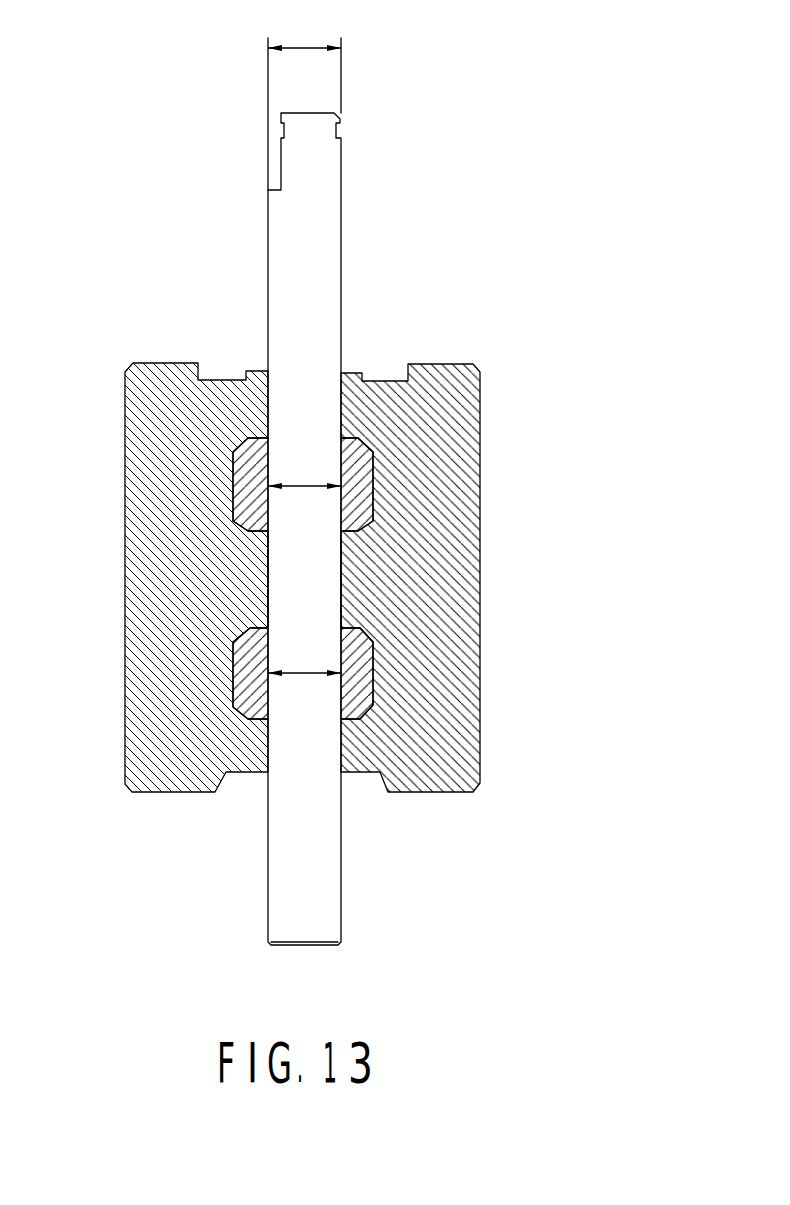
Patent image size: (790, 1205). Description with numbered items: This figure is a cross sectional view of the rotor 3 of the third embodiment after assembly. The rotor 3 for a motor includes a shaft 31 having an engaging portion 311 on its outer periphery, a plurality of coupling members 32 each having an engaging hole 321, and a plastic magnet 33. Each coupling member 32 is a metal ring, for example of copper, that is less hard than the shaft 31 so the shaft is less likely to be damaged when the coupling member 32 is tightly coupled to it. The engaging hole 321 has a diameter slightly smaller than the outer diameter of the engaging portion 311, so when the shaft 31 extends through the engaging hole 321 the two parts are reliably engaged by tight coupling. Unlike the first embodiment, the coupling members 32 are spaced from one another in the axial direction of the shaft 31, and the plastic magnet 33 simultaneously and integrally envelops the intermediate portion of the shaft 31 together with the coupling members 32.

The rotor 3 is at (441, 152).
The shaft 31 is at (250, 264).
The engaging portion 311 is at (343, 467).
The coupling member 32 is at (214, 478).
The engaging hole 321 is at (341, 453).
The plastic magnet 33 is at (162, 378).